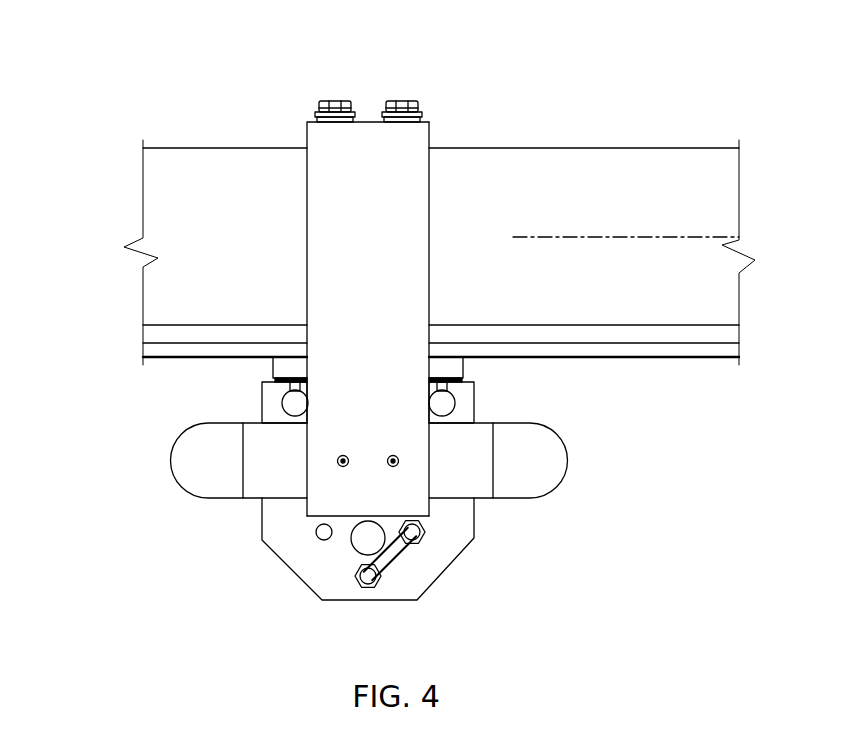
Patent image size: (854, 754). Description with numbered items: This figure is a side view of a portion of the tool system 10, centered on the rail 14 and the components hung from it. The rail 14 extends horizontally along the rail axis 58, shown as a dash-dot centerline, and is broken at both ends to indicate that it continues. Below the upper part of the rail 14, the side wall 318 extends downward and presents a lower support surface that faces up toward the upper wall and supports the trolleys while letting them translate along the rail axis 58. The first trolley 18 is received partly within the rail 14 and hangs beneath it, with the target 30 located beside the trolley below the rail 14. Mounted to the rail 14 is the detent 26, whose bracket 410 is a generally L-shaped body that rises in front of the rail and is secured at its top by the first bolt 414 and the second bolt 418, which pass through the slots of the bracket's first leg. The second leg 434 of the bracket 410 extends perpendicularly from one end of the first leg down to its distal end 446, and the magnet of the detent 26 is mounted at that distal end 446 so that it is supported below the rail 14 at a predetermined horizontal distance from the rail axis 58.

The tool system 10 is at (252, 68).
The rail 14 is at (169, 157).
The first trolley 18 is at (455, 574).
The detent 26 is at (300, 128).
The target 30 is at (163, 462).
The rail axis 58 is at (660, 237).
The side wall 318 is at (182, 303).
The bracket 410 is at (318, 210).
The first bolt 414 is at (336, 101).
The second bolt 418 is at (405, 101).
The second leg 434 is at (418, 203).
The distal end 446 is at (307, 516).